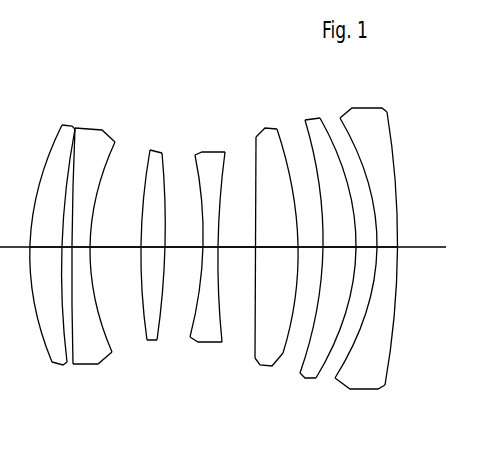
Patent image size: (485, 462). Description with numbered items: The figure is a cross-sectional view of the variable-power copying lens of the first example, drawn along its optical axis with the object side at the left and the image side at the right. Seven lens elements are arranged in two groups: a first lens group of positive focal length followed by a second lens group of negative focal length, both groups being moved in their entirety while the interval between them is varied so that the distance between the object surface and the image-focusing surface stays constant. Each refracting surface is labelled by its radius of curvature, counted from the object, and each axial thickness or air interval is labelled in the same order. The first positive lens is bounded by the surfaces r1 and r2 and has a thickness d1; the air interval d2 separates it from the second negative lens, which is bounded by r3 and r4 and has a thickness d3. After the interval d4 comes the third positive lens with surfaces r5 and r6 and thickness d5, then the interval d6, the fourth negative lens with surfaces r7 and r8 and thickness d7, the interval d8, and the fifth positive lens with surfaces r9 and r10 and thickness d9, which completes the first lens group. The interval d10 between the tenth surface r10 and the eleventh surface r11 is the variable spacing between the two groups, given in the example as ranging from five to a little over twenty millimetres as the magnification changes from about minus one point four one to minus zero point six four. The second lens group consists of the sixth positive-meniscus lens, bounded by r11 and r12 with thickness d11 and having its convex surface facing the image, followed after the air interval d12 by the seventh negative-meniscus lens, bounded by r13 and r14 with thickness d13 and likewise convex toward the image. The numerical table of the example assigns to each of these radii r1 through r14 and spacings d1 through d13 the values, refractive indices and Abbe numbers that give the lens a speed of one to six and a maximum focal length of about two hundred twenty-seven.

The radius of curvature of the first surface r1 is at (62, 124).
The radius of curvature of the second surface r2 is at (75, 128).
The radius of curvature of the third surface r3 is at (78, 128).
The radius of curvature of the fourth surface r4 is at (115, 141).
The radius of curvature of the fifth surface r5 is at (150, 149).
The radius of curvature of the sixth surface r6 is at (162, 152).
The radius of curvature of the seventh surface r7 is at (196, 154).
The radius of curvature of the eighth surface r8 is at (225, 151).
The radius of curvature of the ninth surface r9 is at (262, 128).
The radius of curvature of the tenth surface r10 is at (280, 134).
The radius of curvature of the eleventh surface r11 is at (306, 120).
The radius of curvature of the twelfth surface r12 is at (321, 118).
The radius of curvature of the thirteenth surface r13 is at (352, 108).
The radius of curvature of the fourteenth surface r14 is at (383, 108).
The first lens thickness d1 is at (46, 248).
The second inter-lens interval d2 is at (67, 248).
The third lens thickness d3 is at (81, 248).
The fourth inter-lens interval d4 is at (116, 248).
The fifth lens thickness d5 is at (153, 248).
The sixth inter-lens interval d6 is at (184, 248).
The seventh lens thickness d7 is at (210, 248).
The eighth inter-lens interval d8 is at (238, 248).
The ninth lens thickness d9 is at (278, 248).
The tenth inter-lens interval d10 is at (310, 248).
The eleventh lens thickness d11 is at (340, 248).
The twelfth inter-lens interval d12 is at (366, 248).
The thirteenth lens thickness d13 is at (388, 248).